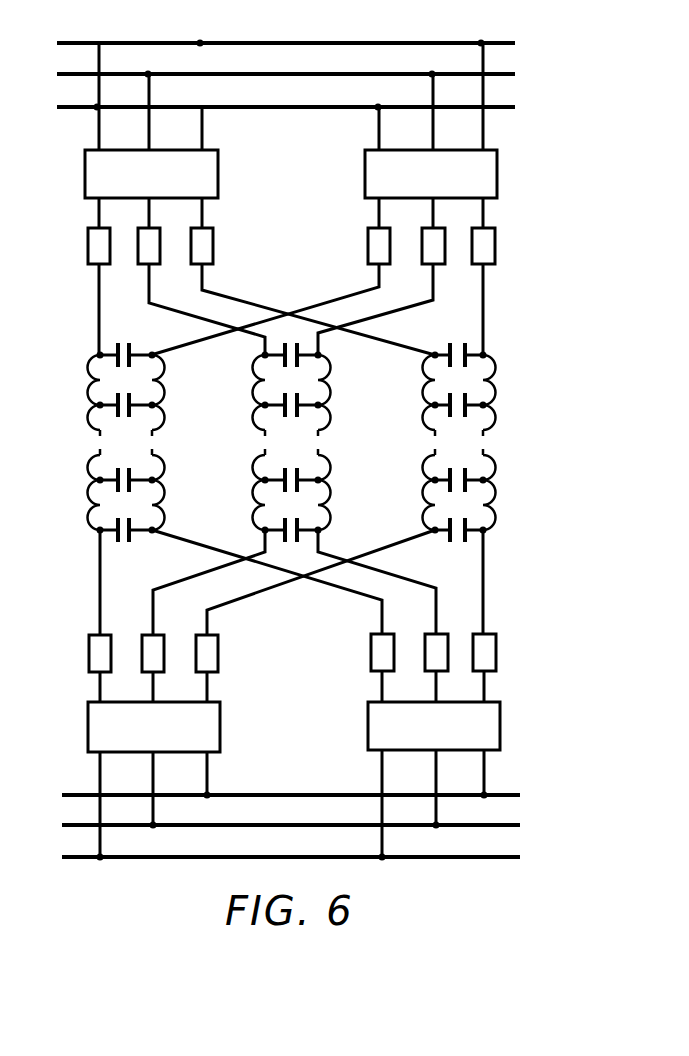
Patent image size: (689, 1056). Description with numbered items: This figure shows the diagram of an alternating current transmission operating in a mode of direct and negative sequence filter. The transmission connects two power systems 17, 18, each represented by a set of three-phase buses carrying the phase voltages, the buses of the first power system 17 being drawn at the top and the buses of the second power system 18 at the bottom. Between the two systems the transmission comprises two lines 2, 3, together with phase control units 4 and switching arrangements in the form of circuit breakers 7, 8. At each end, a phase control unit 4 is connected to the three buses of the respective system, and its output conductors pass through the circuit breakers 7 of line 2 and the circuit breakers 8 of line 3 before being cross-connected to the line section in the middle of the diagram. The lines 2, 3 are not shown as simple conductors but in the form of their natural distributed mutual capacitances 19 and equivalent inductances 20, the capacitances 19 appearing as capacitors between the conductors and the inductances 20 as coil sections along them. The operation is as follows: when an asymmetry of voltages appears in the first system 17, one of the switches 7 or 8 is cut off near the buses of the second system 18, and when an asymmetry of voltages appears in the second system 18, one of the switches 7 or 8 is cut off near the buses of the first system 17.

The line 2 is at (100, 281).
The line 3 is at (380, 270).
The phase control unit 4 is at (292, 450).
The switching arrangement circuit breaker 7 is at (110, 244).
The switching arrangement circuit breaker 8 is at (367, 240).
The power system 17 is at (516, 43).
The power system 18 is at (521, 795).
The natural distributed mutual capacitance 19 is at (113, 352).
The equivalent inductance 20 is at (88, 404).